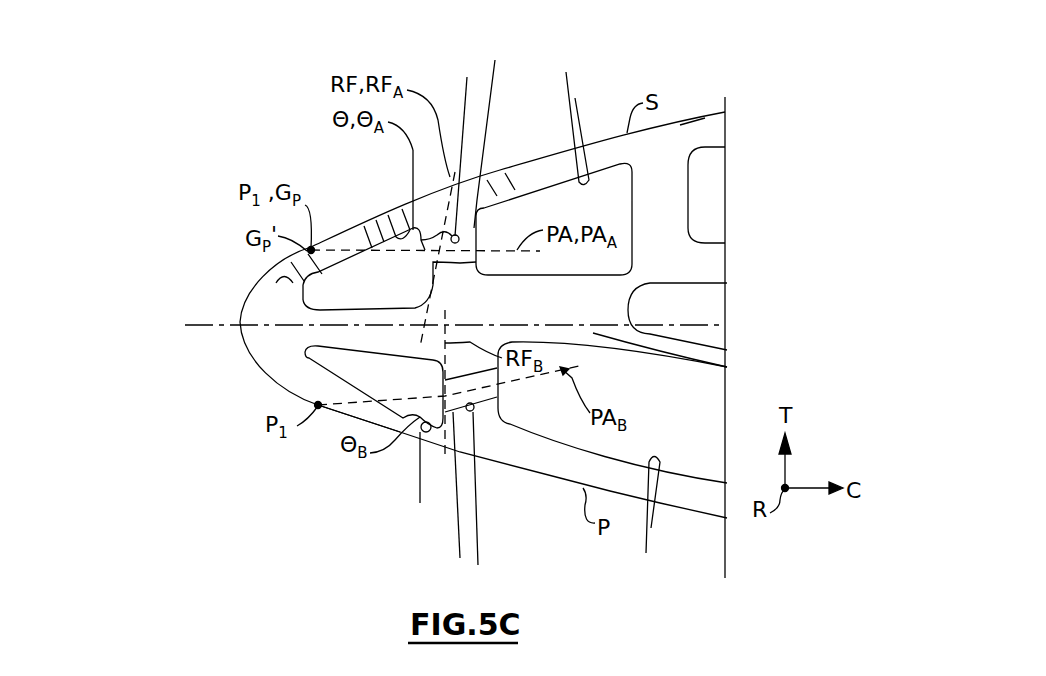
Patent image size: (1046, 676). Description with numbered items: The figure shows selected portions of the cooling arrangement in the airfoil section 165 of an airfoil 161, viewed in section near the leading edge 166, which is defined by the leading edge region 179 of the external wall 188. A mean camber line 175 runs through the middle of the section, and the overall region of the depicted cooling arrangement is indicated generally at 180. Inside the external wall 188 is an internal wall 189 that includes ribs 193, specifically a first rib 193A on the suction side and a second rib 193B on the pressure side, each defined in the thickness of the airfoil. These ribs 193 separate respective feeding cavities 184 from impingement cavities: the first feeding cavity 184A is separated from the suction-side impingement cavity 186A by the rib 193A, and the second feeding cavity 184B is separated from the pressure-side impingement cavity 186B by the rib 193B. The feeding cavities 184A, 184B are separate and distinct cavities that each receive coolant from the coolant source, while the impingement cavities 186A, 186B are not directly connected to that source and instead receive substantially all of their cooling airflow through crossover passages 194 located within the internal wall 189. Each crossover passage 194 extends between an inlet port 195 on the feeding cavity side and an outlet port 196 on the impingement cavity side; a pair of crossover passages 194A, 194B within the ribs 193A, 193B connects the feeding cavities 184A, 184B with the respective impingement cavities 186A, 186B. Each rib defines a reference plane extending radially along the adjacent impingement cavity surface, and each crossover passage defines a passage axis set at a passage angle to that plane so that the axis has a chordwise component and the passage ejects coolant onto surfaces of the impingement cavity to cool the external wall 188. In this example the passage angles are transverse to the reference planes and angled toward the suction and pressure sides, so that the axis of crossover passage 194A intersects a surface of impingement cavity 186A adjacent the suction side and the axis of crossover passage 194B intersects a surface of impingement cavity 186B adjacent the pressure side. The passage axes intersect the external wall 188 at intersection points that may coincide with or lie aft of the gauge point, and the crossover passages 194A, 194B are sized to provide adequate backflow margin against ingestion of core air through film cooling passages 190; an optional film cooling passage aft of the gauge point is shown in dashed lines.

The airfoil 161 is at (121, 92).
The leading edge region 180 is at (285, 105).
The airfoil section 165 is at (693, 110).
The leading edge 166 is at (240, 327).
The mean camber line 175 is at (695, 326).
The leading edge region 179 is at (328, 418).
The feeding cavity 184 is at (623, 124).
The first feeding cavity 184A is at (566, 90).
The second feeding cavity 184B is at (646, 552).
The impingement cavity 186A is at (378, 232).
The impingement cavity 186B is at (420, 503).
The external wall 188 is at (702, 125).
The internal wall 189 is at (593, 332).
The film cooling passage 190 is at (277, 283).
The rib 193 is at (513, 129).
The rib 193A is at (495, 62).
The rib 193B is at (460, 535).
The crossover passage 194 is at (523, 490).
The crossover passage 194A is at (467, 77).
The crossover passage 194B is at (478, 560).
The inlet port 195 is at (478, 230).
The outlet port 196 is at (432, 252).